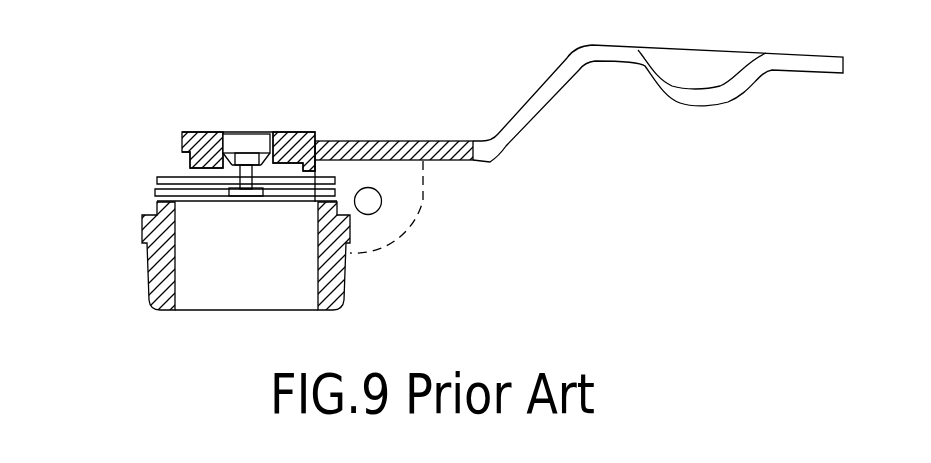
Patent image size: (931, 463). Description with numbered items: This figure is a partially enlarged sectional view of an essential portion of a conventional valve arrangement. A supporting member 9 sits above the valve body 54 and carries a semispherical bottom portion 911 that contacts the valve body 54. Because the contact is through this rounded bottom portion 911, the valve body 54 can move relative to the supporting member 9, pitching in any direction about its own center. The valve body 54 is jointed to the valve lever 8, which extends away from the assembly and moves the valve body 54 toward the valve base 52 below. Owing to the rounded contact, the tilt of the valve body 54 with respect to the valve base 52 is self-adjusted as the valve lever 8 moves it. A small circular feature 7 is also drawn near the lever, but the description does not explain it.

The pivot hole 7 is at (382, 201).
The valve lever 8 is at (508, 137).
The supporting member 9 is at (181, 148).
The semispherical bottom portion 911 is at (268, 198).
The valve body 54 is at (156, 190).
The valve base 52 is at (143, 238).